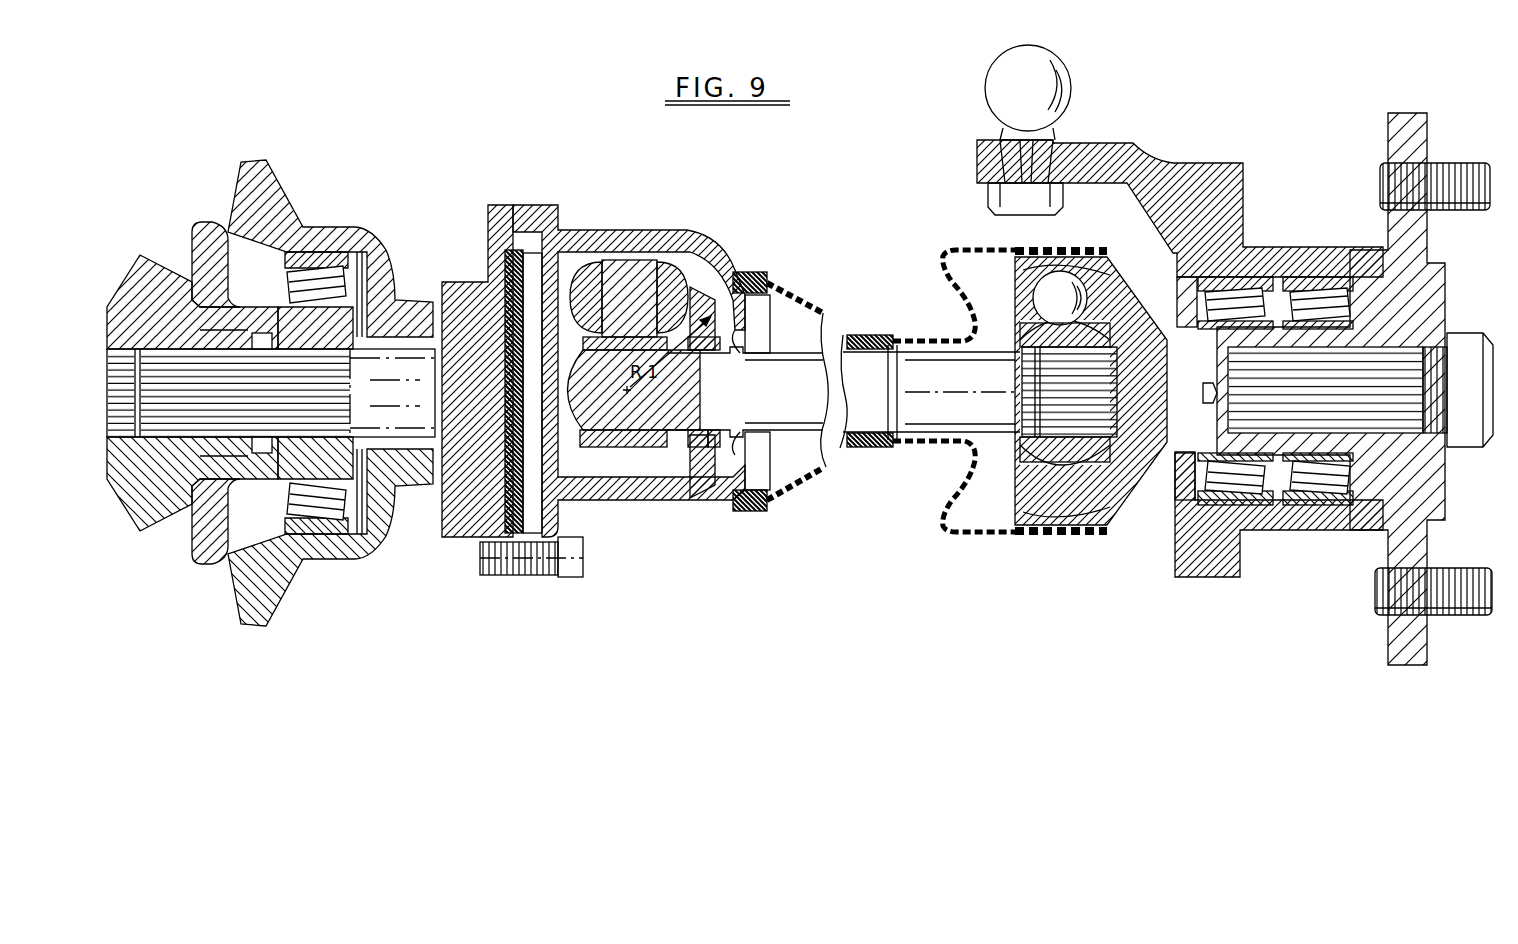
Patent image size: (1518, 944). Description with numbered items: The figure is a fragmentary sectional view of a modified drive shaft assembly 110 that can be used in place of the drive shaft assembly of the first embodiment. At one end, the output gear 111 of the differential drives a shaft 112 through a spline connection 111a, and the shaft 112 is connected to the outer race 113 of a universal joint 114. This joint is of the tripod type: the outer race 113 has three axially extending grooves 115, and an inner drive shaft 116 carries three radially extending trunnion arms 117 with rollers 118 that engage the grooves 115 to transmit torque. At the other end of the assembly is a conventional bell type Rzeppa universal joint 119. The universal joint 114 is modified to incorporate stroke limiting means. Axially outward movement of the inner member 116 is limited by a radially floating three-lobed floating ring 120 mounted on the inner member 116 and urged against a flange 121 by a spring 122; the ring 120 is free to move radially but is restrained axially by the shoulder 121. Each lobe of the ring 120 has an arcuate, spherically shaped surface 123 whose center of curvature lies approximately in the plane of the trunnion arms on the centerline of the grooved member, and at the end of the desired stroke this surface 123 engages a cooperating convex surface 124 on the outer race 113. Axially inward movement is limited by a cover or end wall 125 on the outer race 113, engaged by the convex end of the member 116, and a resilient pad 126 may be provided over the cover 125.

The drive shaft assembly 110 is at (814, 272).
The output gear 111 is at (165, 503).
The spline connection 111a is at (176, 346).
The shaft 112 is at (412, 403).
The outer race 113 is at (597, 231).
The universal joint 114 is at (684, 228).
The grooves 115 is at (702, 252).
The inner drive shaft 116 is at (558, 418).
The trunnion arms 117 is at (630, 277).
The rollers 118 is at (582, 300).
The Rzeppa universal joint 119 is at (1000, 244).
The floating ring 120 is at (700, 455).
The flange 121 is at (690, 440).
The spring 122 is at (708, 440).
The arcuate surface 123 is at (760, 312).
The convex surface 124 is at (760, 318).
The cover or end wall 125 is at (465, 507).
The resilient pad 126 is at (523, 512).